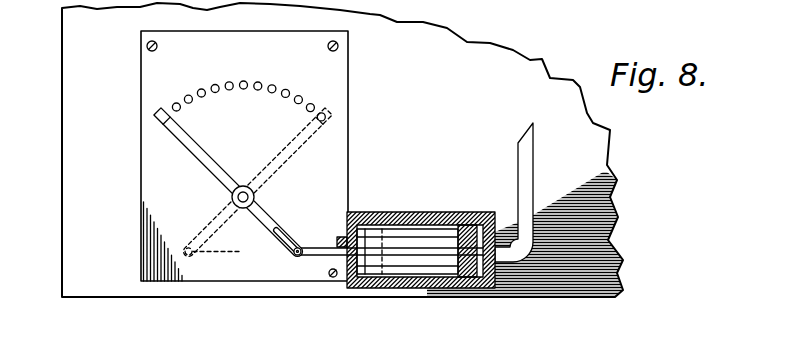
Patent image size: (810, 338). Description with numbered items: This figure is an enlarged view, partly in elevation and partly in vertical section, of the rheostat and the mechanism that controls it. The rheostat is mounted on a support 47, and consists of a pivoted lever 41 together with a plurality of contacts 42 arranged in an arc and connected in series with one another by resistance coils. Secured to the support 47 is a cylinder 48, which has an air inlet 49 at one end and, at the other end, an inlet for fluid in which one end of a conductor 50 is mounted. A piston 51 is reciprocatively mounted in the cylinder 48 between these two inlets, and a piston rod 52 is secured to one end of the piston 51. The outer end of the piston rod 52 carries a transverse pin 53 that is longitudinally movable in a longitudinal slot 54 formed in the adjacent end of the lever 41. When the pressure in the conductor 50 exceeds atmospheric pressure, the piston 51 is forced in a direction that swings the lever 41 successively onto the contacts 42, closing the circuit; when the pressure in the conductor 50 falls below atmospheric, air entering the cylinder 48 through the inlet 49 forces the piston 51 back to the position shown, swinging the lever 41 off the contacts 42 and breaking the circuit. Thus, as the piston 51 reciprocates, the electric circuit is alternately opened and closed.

The pivoted lever 41 is at (213, 160).
The contacts 42 is at (257, 81).
The support 47 is at (346, 150).
The cylinder 48 is at (437, 207).
The air inlet 49 is at (336, 278).
The conductor 50 is at (521, 181).
The piston 51 is at (470, 224).
The piston rod 52 is at (428, 252).
The transverse pin 53 is at (299, 248).
The longitudinal slot 54 is at (276, 252).